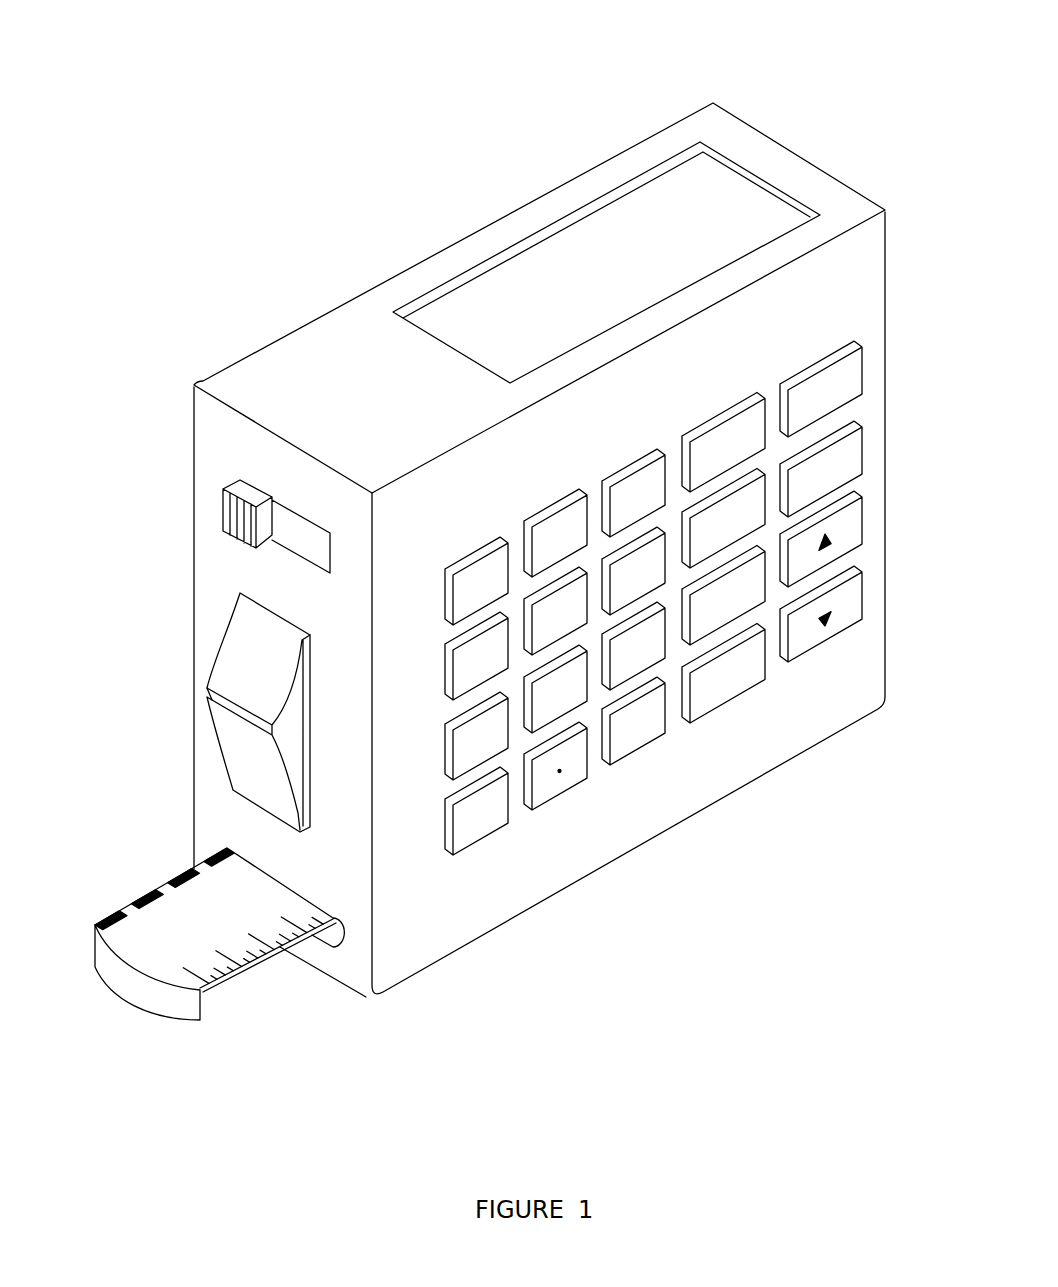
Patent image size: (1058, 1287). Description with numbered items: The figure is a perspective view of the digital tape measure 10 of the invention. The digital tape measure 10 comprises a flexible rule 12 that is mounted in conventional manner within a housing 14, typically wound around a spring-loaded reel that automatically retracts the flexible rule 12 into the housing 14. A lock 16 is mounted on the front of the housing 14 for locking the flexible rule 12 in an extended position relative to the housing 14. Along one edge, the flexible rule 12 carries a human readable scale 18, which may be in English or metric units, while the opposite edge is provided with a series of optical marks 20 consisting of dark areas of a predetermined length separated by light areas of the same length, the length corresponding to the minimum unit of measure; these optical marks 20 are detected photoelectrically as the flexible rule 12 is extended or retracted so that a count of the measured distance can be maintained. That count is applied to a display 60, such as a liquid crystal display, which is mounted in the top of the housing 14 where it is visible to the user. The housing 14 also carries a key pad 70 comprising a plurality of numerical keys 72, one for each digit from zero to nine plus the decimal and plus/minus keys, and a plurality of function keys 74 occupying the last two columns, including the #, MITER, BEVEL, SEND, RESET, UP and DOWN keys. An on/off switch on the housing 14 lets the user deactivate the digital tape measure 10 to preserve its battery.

The digital tape measure 10 is at (368, 157).
The flexible rule 12 is at (152, 952).
The housing 14 is at (852, 281).
The lock 16 is at (252, 667).
The human readable scale 18 is at (245, 960).
The optical marks 20 is at (145, 892).
The display 60 is at (732, 165).
The key pad 70 is at (647, 793).
The numerical keys 72 is at (623, 458).
The function keys 74 is at (810, 353).